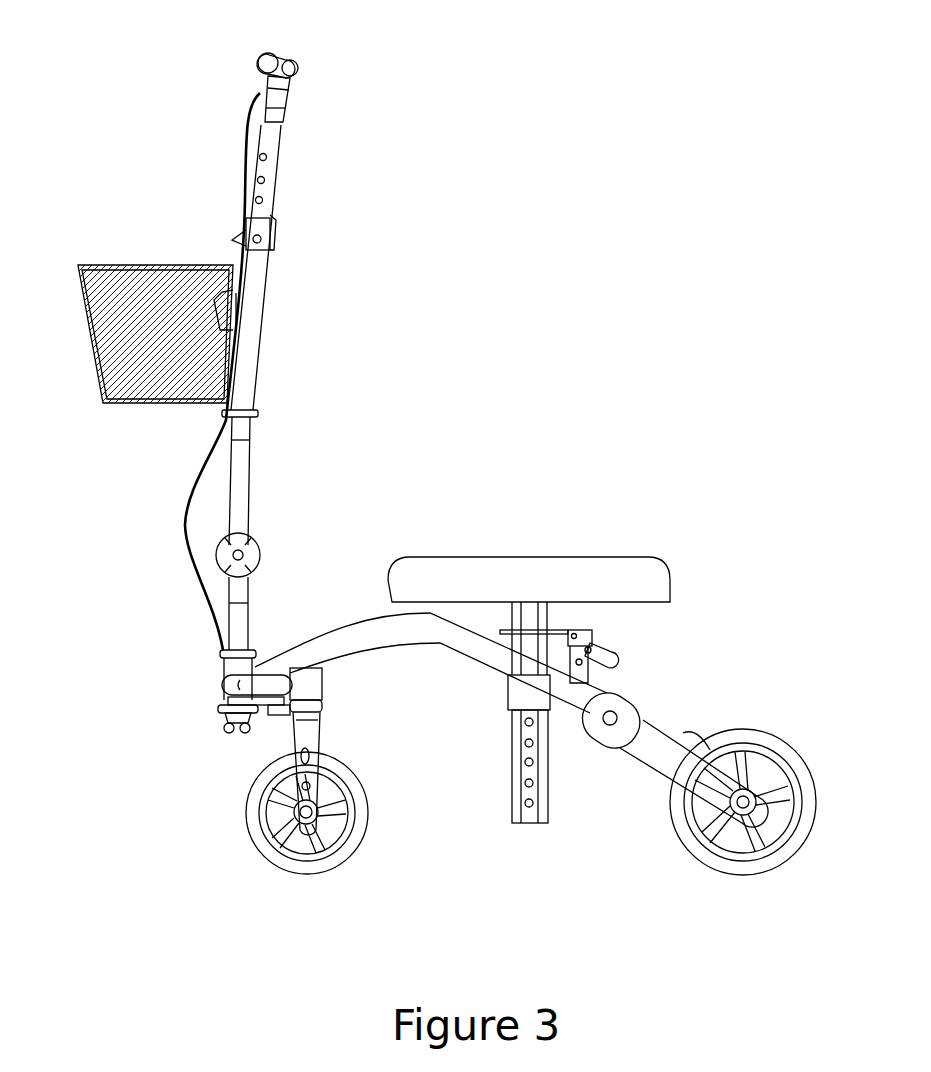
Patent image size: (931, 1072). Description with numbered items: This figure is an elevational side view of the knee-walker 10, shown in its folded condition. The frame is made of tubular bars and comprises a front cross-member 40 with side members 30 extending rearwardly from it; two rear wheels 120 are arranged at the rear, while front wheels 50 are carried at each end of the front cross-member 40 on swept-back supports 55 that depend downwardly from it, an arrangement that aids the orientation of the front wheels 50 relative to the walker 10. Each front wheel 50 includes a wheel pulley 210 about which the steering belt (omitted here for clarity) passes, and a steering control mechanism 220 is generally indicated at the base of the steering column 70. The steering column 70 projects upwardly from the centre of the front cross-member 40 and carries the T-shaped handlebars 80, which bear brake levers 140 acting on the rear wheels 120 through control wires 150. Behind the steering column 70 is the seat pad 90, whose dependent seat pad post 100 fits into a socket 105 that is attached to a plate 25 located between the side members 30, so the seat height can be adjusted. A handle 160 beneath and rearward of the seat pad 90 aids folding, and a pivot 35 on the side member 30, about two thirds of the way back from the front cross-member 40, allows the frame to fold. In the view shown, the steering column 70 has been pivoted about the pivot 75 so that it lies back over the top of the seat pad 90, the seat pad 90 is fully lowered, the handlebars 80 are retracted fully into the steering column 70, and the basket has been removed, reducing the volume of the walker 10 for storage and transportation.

The knee-walker 10 is at (150, 82).
The handlebars 80 is at (292, 65).
The brake levers 140 is at (283, 118).
The control wires 150 is at (242, 185).
The steering column 70 is at (257, 348).
The pivot 75 is at (262, 552).
The seat pad 90 is at (532, 570).
The plate 25 is at (576, 636).
The handle 160 is at (622, 662).
The rear wheels 120 is at (755, 742).
The front cross-member 40 is at (316, 688).
The socket 105 is at (508, 695).
The pivot 35 is at (612, 742).
The side members 30 is at (681, 765).
The steering control mechanism 220 is at (185, 726).
The wheel pulley 210 is at (292, 724).
The front wheel supports 55 is at (300, 802).
The front wheels 50 is at (350, 840).
The seat pad post 100 is at (528, 818).